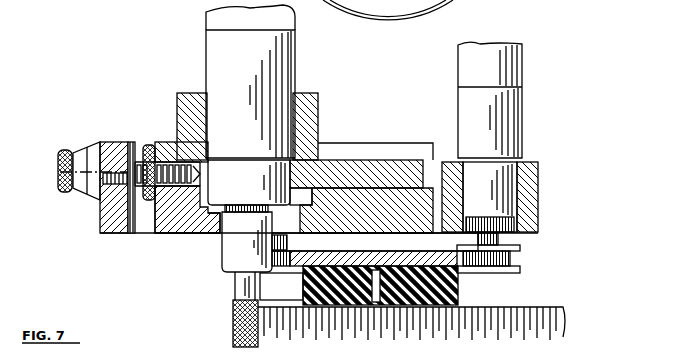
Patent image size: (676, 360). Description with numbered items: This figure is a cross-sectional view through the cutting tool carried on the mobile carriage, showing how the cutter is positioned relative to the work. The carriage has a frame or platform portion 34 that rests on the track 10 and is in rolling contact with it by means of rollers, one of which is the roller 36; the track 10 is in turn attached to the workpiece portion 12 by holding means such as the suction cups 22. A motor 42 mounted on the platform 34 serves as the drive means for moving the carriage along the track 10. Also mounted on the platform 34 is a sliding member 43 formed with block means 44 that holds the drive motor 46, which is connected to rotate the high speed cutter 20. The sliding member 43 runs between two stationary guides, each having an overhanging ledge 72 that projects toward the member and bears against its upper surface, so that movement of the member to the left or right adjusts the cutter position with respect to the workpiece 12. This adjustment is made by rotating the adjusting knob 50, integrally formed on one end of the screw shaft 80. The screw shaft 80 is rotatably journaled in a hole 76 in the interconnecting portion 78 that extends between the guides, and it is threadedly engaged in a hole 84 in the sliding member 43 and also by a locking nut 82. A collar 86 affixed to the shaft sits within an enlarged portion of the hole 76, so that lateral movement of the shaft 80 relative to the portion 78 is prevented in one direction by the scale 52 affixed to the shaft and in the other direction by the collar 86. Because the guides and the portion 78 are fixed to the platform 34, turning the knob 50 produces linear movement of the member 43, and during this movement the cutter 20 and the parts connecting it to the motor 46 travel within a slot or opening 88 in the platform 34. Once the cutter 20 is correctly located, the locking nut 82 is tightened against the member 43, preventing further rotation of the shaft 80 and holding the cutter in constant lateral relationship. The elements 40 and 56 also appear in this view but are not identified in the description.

The track 10 is at (378, 251).
The workpiece portion 12 is at (530, 300).
The high speed cutter 20 is at (233, 332).
The suction cups 22 is at (458, 288).
The platform portion 34 is at (190, 217).
The roller 36 is at (281, 286).
The lock nut 40 is at (517, 262).
The motor 42 is at (508, 125).
The sliding member 43 is at (330, 162).
The block means 44 is at (192, 93).
The drive motor 46 is at (277, 23).
The adjusting knob 50 is at (63, 152).
The scale 52 is at (98, 142).
The bearing block 56 is at (530, 207).
The overhanging ledge 72 is at (403, 155).
The hole 76 is at (127, 142).
The interconnecting portion 78 is at (117, 233).
The screw shaft 80 is at (134, 190).
The locking nut 82 is at (150, 147).
The hole 84 is at (188, 187).
The collar 86 is at (115, 194).
The slot or opening 88 is at (218, 228).